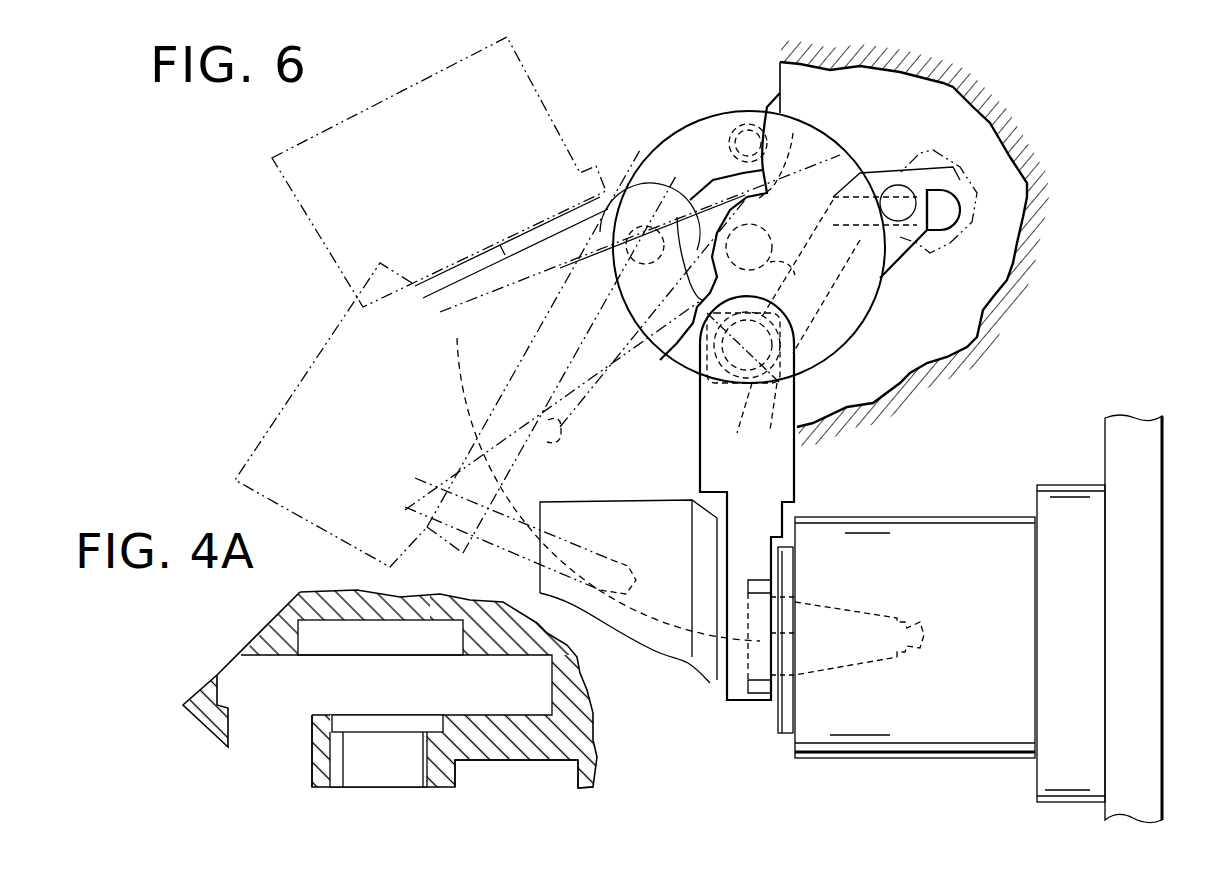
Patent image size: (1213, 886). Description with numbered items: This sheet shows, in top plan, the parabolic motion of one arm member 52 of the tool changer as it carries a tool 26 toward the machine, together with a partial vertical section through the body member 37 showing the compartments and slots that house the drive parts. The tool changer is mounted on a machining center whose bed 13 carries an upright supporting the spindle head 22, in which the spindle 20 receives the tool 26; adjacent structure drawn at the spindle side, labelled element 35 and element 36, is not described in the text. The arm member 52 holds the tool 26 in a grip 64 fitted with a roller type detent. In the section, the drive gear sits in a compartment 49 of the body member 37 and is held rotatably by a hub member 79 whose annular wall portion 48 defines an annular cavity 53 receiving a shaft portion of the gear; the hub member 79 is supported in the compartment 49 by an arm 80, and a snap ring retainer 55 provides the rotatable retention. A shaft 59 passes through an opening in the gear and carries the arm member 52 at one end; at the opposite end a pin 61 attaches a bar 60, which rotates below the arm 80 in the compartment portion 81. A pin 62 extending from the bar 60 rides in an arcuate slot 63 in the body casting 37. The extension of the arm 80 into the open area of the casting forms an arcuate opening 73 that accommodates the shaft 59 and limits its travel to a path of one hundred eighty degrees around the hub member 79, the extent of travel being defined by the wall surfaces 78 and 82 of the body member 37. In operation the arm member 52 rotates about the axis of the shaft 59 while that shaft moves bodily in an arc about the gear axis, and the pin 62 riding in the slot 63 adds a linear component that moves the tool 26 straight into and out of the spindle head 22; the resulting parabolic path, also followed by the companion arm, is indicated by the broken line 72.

In FIG. 6, the tool 26 is at (361, 108).
In FIG. 6, the arm member 52 is at (513, 237).
In FIG. 6, the bed 13 is at (668, 140).
In FIG. 6, the wall surface 78 is at (778, 82).
In FIG. 6, the hub member 79 is at (690, 205).
In FIG. 4A, the hub member 79 is at (460, 778).
In FIG. 6, the bar 60 is at (882, 175).
In FIG. 6, the pin 62 is at (902, 197).
In FIG. 6, the arcuate slot 63 is at (950, 210).
In FIG. 4A, the arcuate slot 63 is at (317, 635).
In FIG. 6, the body member 37 is at (953, 83).
In FIG. 4A, the body member 37 is at (575, 713).
In FIG. 6, the retainer 55 is at (790, 255).
In FIG. 6, the wall surface 82 is at (797, 453).
In FIG. 6, the pin 61 is at (805, 383).
In FIG. 6, the shaft 59 is at (752, 388).
In FIG. 6, the broken line 72 is at (486, 545).
In FIG. 6, the spindle 20 is at (783, 735).
In FIG. 6, the grip 64 is at (733, 703).
In FIG. 6, the spindle head 22 is at (932, 543).
In FIG. 6, the mounting block 35 is at (1057, 500).
In FIG. 6, the frame 36 is at (1135, 425).
In FIG. 4A, the compartment portion 81 is at (465, 699).
In FIG. 4A, the annular cavity 53 is at (423, 760).
In FIG. 4A, the annular wall portion 48 is at (307, 770).
In FIG. 4A, the arm 80 is at (532, 748).
In FIG. 4A, the compartment 49 is at (565, 782).
In FIG. 4A, the arcuate opening 73 is at (228, 735).